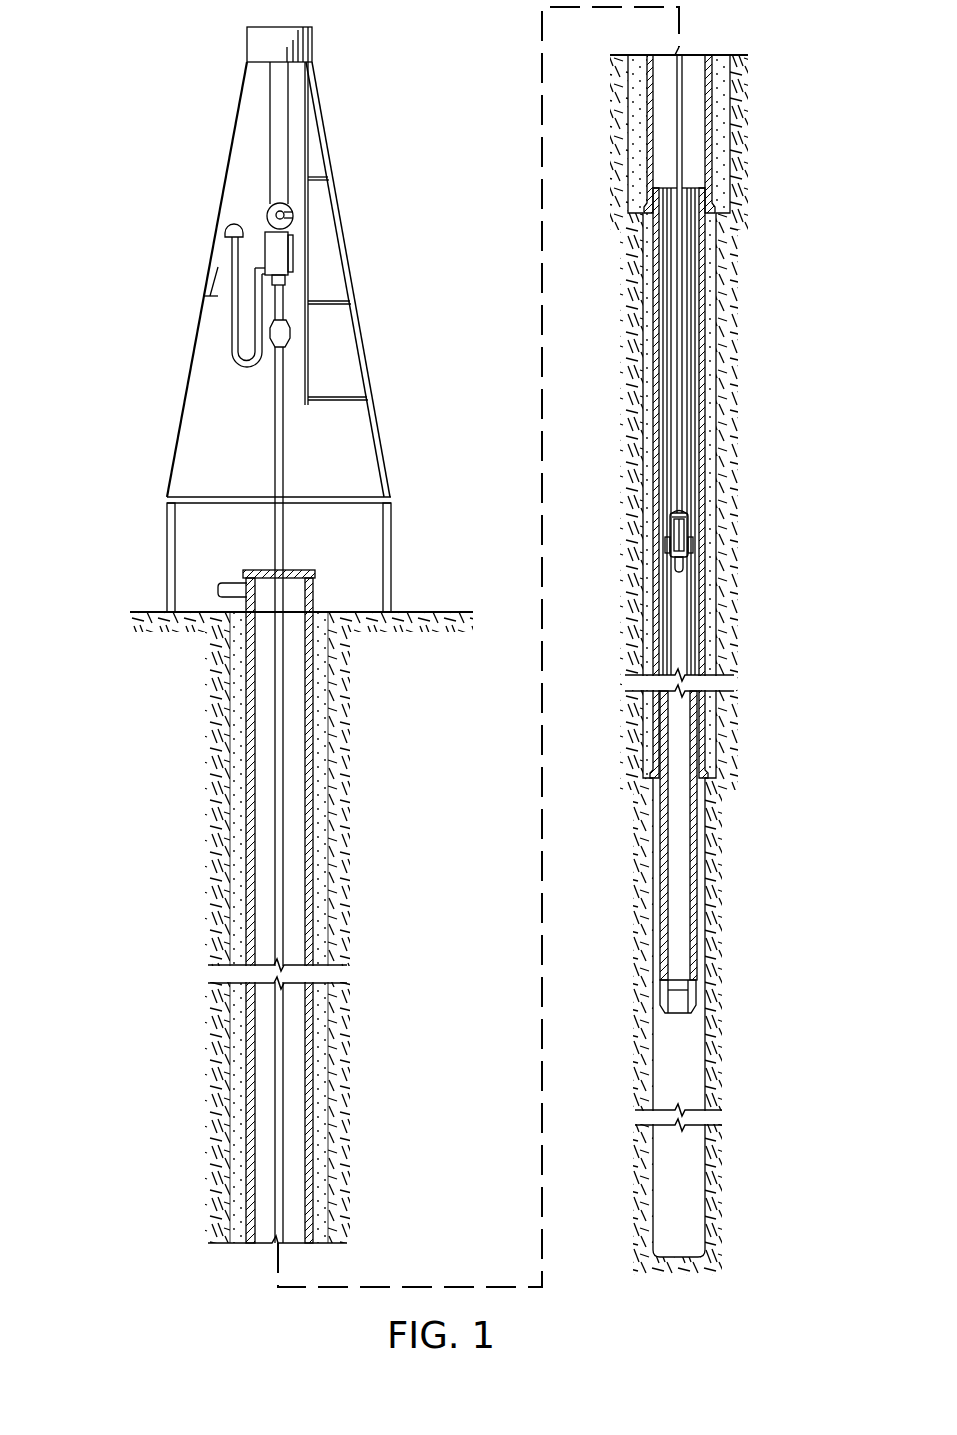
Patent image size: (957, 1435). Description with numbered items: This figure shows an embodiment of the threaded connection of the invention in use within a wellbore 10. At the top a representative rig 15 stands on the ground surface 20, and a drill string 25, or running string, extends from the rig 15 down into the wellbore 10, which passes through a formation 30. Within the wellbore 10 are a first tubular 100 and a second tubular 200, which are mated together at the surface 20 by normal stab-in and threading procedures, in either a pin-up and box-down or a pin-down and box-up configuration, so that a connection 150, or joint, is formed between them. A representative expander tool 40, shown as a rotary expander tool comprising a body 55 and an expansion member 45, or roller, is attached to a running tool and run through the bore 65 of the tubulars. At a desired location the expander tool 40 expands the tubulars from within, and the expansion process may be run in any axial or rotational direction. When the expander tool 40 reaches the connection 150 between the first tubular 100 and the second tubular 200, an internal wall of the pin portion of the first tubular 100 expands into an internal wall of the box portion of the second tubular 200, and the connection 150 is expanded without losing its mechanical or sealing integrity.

The wellbore 10 is at (676, 1195).
The rig 15 is at (187, 391).
The ground surface 20 is at (148, 612).
The drill string 25 is at (275, 1092).
The formation 30 is at (718, 910).
The expander tool 40 is at (738, 549).
The expansion member 45 is at (693, 540).
The body 55 is at (688, 517).
The bore 65 is at (683, 237).
The first tubular 100 is at (690, 665).
The connection 150 is at (697, 556).
The second tubular 200 is at (688, 392).